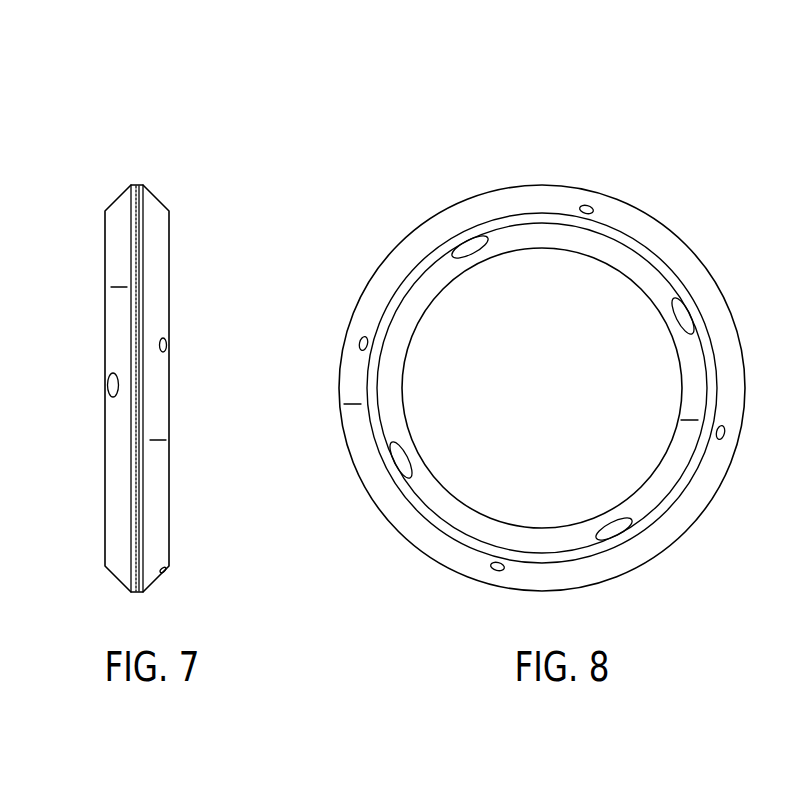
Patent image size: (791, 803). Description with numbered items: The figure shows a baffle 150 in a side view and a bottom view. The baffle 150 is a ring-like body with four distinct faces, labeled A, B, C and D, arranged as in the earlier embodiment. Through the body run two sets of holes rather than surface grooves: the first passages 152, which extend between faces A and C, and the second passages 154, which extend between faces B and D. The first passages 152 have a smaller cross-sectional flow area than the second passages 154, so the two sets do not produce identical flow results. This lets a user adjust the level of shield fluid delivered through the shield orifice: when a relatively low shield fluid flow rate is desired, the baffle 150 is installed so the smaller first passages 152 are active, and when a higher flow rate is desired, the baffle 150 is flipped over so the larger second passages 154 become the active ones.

In FIG. 7, the baffle 150 is at (184, 195).
In FIG. 8, the baffle 150 is at (639, 199).
In FIG. 7, the first passages 152 is at (167, 345).
In FIG. 8, the first passages 152 is at (586, 206).
In FIG. 7, the second passages 154 is at (108, 385).
In FIG. 8, the second passages 154 is at (468, 247).